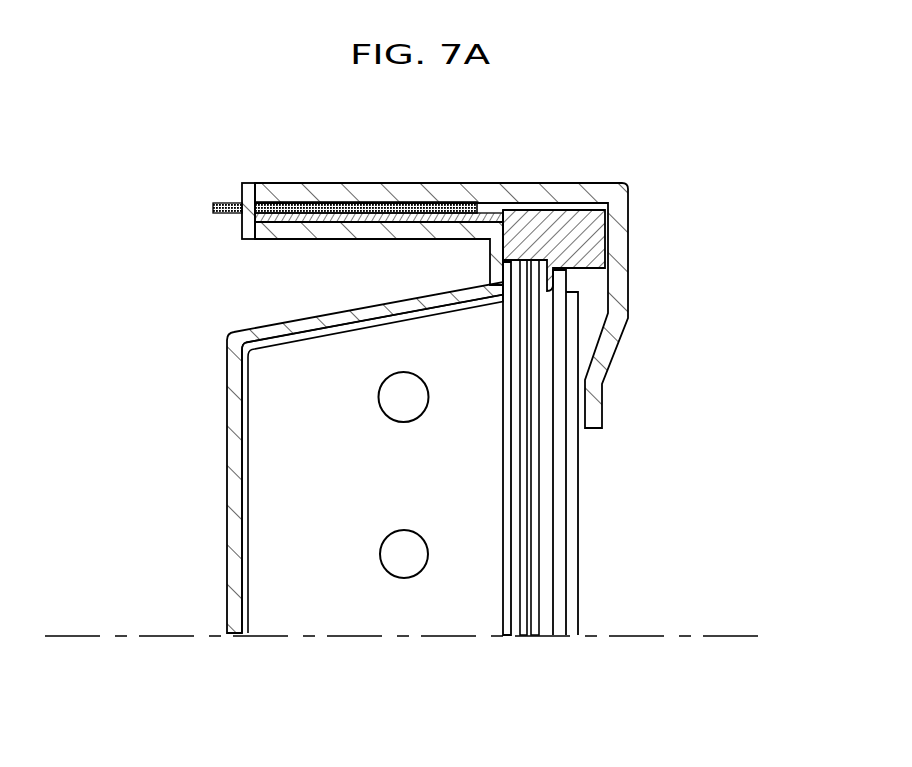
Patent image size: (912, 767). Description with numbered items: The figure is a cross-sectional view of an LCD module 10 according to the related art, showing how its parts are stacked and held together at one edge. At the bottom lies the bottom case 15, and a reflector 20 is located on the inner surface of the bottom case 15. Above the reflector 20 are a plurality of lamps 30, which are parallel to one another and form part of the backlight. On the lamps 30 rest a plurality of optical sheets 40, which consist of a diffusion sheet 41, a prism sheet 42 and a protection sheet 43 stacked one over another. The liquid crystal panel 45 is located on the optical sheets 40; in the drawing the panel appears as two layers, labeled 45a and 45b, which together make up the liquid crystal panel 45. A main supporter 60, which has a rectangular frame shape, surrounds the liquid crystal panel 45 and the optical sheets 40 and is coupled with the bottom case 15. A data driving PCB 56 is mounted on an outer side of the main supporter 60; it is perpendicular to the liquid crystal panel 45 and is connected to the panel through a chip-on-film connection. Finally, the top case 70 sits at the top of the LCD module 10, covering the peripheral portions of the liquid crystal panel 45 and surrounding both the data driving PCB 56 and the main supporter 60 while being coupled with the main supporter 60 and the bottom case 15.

The LCD module 10 is at (710, 188).
The bottom case 15 is at (232, 432).
The reflector 20 is at (245, 478).
The lamps 30 is at (400, 551).
The optical sheets 40 is at (405, 437).
The diffusion sheet 41 is at (507, 431).
The prism sheet 42 is at (522, 453).
The protection sheet 43 is at (535, 478).
The liquid crystal panel 45 is at (712, 493).
The first bracket portion 45a is at (560, 500).
The second bracket portion 45b is at (573, 483).
The data driving PCB 56 is at (369, 202).
The main supporter 60 is at (561, 216).
The top case 70 is at (493, 186).